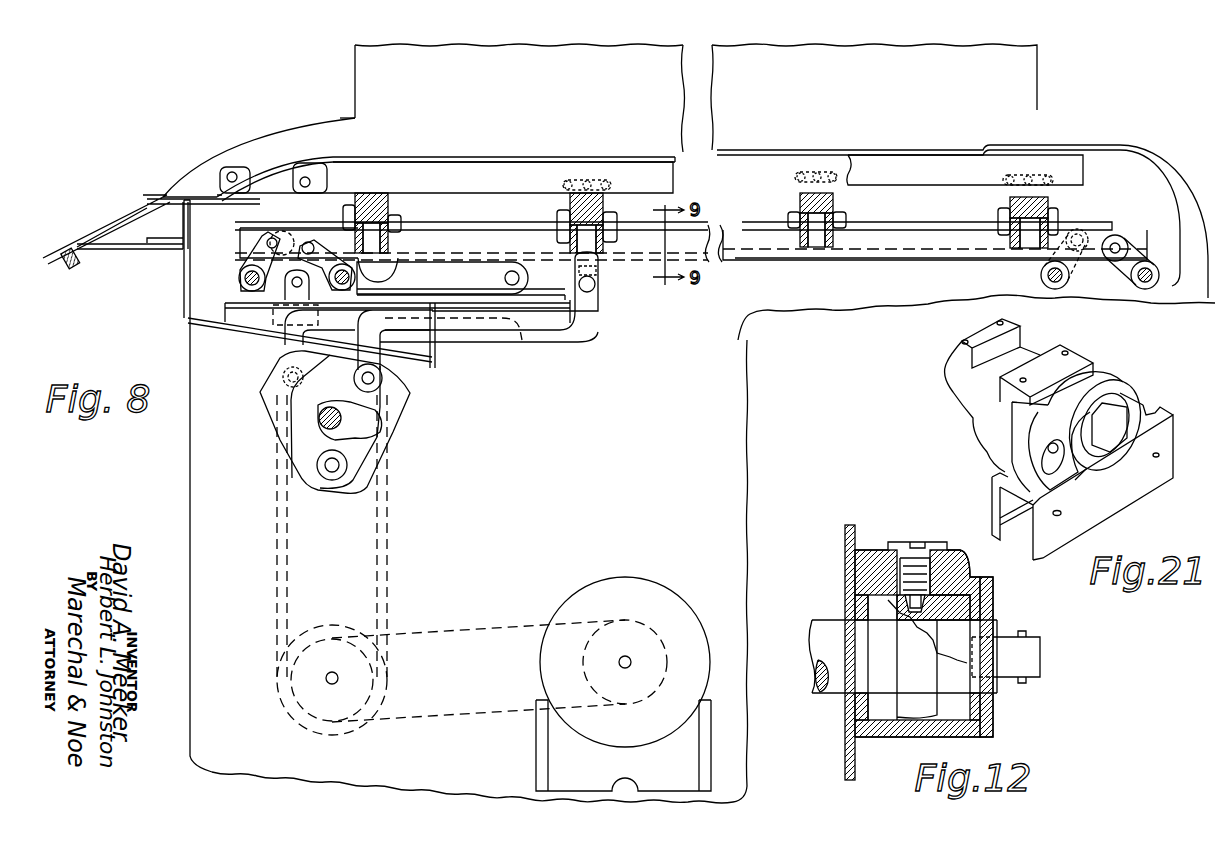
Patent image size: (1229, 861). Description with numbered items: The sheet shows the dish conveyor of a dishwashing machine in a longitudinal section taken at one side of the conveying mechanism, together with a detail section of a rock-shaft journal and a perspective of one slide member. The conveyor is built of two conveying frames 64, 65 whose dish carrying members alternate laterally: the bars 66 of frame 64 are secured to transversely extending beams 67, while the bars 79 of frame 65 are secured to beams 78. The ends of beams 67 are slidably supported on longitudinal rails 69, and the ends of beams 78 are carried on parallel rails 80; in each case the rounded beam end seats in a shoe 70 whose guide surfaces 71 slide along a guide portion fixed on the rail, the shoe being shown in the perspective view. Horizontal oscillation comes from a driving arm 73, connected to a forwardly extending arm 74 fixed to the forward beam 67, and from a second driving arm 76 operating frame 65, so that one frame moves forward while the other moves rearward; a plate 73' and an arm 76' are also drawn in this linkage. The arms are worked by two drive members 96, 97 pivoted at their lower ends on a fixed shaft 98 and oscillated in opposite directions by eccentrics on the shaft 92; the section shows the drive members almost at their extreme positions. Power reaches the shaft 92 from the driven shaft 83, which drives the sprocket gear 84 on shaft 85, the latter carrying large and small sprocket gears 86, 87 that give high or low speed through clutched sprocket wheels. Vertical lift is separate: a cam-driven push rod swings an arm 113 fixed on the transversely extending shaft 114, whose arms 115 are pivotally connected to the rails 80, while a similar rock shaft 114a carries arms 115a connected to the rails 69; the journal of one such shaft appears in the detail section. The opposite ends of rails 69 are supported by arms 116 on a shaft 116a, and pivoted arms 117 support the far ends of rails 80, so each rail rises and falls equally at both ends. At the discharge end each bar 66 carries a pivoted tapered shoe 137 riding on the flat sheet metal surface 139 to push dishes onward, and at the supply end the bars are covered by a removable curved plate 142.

In FIG. 8, the tapered shoe 137 is at (287, 172).
In FIG. 8, the flat sheet metal surface 139 is at (203, 196).
In FIG. 8, the dish carrying members or bars 79 is at (408, 170).
In FIG. 8, the dish carrying members 66 is at (445, 160).
In FIG. 8, the transversely extending beams 67 is at (370, 205).
In FIG. 21, the transversely extending beams 67 is at (963, 405).
In FIG. 8, the beams 78 is at (595, 200).
In FIG. 8, the curved plate 142 is at (1118, 155).
In FIG. 8, the conveying frame 64 is at (768, 224).
In FIG. 8, the conveying frame 65 is at (750, 258).
In FIG. 8, the rails 80 is at (856, 258).
In FIG. 8, the rails 69 is at (488, 228).
In FIG. 8, the forwardly extending arm 74 is at (448, 265).
In FIG. 8, the driving arm 73 is at (377, 348).
In FIG. 8, the plate 73' is at (463, 260).
In FIG. 8, the driving arm 76 is at (489, 341).
In FIG. 8, the link arm 76' is at (606, 291).
In FIG. 8, the arm 113 is at (285, 267).
In FIG. 8, the transversely extending shaft 114 is at (390, 262).
In FIG. 8, the rock shaft 114a is at (246, 276).
In FIG. 12, the rock shaft 114a is at (832, 628).
In FIG. 8, the arms 115 is at (323, 240).
In FIG. 8, the arms 115a is at (262, 255).
In FIG. 8, the arms 116 is at (1081, 258).
In FIG. 8, the shaft 116a is at (1055, 289).
In FIG. 8, the pivoted arms 117 is at (1122, 250).
In FIG. 8, the drive member 96 is at (268, 400).
In FIG. 8, the drive member 97 is at (398, 425).
In FIG. 8, the shaft 92 is at (318, 418).
In FIG. 8, the fixed shaft 98 is at (331, 472).
In FIG. 8, the driven shaft 83 is at (626, 660).
In FIG. 8, the sprocket gear 84 is at (335, 640).
In FIG. 8, the shaft 85 is at (340, 666).
In FIG. 8, the large sprocket gear 86 is at (385, 692).
In FIG. 8, the small sprocket gear 87 is at (365, 725).
In FIG. 21, the shoes 70 is at (1137, 482).
In FIG. 21, the guide surfaces 71 is at (1026, 528).